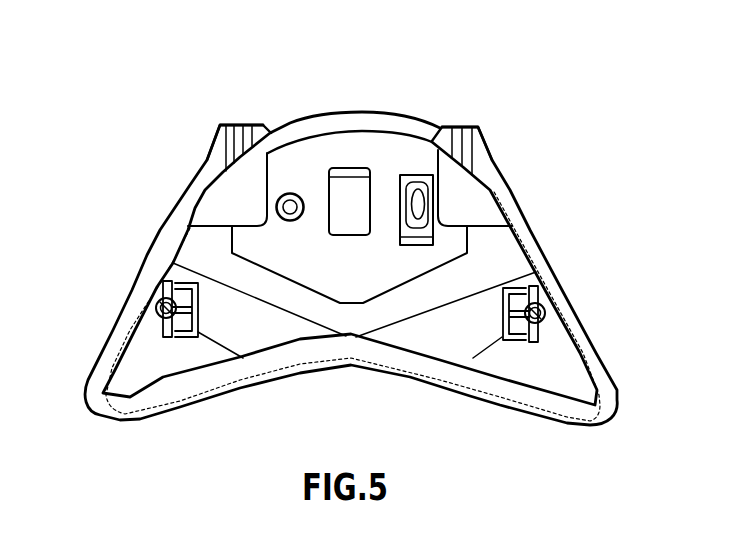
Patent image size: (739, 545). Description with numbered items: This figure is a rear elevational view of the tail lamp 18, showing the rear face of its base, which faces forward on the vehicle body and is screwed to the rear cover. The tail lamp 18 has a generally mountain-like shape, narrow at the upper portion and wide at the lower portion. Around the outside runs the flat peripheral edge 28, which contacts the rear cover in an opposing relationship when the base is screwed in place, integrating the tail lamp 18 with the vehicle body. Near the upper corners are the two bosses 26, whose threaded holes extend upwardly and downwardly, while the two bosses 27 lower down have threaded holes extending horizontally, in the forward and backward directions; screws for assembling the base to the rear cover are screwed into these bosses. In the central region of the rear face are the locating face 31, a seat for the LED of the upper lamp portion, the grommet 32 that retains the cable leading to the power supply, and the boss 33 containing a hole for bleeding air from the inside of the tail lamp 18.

The tail lamp 18 is at (132, 252).
The bosses 26 is at (231, 124).
The bosses 27 is at (156, 309).
The peripheral edge 28 is at (537, 241).
The locating face 31 is at (353, 228).
The grommet 32 is at (402, 176).
The boss 33 is at (292, 221).